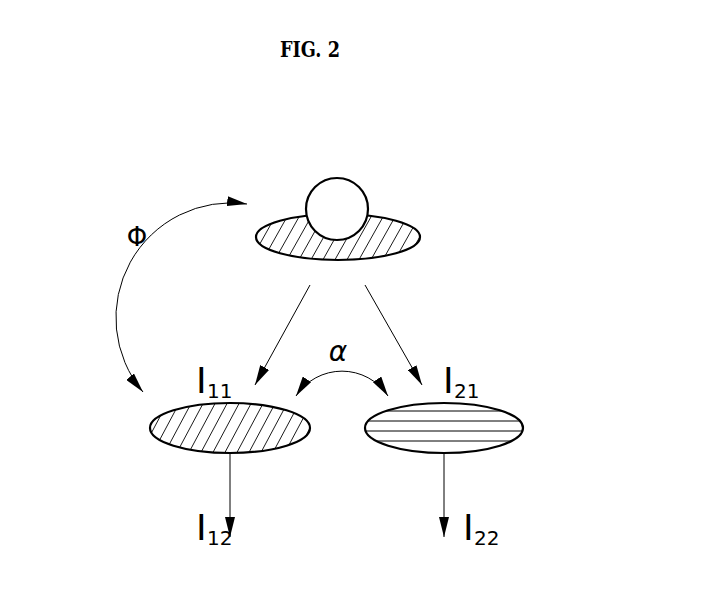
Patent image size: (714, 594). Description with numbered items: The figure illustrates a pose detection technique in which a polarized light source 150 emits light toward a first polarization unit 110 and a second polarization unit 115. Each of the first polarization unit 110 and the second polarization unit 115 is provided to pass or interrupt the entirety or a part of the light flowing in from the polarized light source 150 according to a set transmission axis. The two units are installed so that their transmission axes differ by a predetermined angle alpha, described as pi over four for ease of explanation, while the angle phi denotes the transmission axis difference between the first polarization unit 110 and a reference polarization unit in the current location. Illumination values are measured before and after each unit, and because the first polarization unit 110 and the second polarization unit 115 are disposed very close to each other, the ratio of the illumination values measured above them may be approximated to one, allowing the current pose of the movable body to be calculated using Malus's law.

The polarized light source 150 is at (427, 208).
The first polarization unit 110 is at (140, 437).
The second polarization unit 115 is at (537, 435).